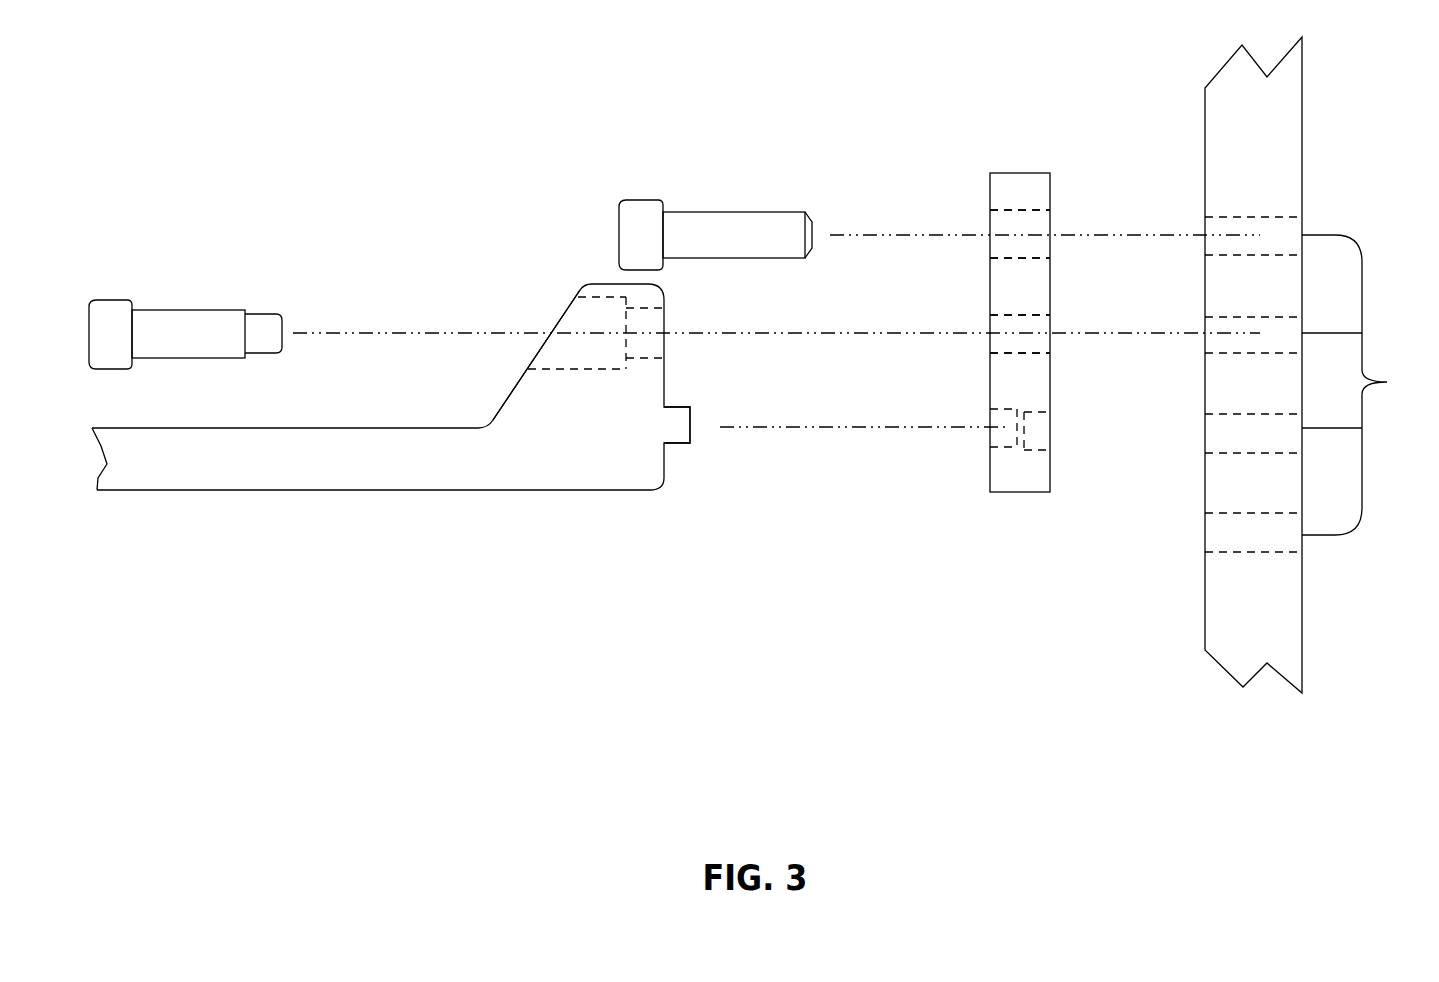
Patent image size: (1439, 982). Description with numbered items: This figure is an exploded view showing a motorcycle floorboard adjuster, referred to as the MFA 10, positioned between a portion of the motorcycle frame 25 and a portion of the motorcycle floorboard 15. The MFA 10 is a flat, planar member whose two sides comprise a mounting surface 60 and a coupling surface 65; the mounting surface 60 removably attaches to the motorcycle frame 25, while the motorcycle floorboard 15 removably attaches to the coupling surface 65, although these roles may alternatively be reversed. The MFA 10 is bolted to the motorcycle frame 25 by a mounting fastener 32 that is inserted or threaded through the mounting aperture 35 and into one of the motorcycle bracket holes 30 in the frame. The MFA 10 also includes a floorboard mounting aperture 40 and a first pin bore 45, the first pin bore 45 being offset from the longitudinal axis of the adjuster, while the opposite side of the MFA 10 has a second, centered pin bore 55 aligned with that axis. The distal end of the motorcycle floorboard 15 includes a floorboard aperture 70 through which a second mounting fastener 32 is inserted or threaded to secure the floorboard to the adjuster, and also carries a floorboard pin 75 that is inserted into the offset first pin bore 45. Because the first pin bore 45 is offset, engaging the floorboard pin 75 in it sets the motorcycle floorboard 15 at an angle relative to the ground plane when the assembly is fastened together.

The motorcycle floorboard adjuster (MFA) 10 is at (1000, 481).
The motorcycle floorboard 15 is at (546, 449).
The motorcycle frame 25 is at (1229, 149).
The motorcycle bracket holes 30 is at (1367, 385).
The mounting fastener 32 is at (222, 349).
The mounting aperture 35 is at (990, 222).
The floorboard mounting aperture 40 is at (990, 343).
The first pin bore 45 is at (990, 435).
The second pin bore 55 is at (1052, 421).
The mounting surface 60 is at (1050, 303).
The coupling surface 65 is at (990, 303).
The floorboard aperture 70 is at (558, 315).
The floorboard pin 75 is at (692, 437).